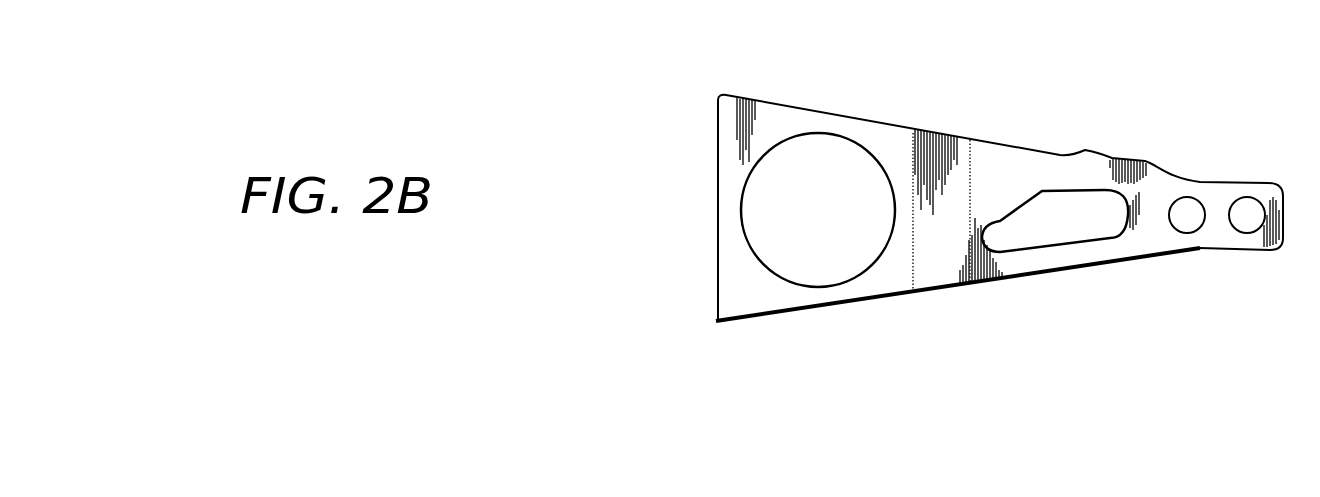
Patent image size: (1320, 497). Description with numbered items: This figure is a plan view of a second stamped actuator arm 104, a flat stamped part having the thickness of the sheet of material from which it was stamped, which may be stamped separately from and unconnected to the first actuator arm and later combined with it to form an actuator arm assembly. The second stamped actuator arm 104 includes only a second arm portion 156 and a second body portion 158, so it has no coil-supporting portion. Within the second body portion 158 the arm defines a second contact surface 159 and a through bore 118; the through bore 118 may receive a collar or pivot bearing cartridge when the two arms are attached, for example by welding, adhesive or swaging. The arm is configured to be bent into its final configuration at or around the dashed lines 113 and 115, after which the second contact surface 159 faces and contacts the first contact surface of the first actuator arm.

The second stamped actuator arm 104 is at (1236, 168).
The dashed line 113 is at (972, 162).
The dashed line 115 is at (915, 160).
The through bore 118 is at (819, 235).
The second arm portion 156 is at (1282, 71).
The second body portion 158 is at (903, 68).
The second contact surface 159 is at (762, 295).